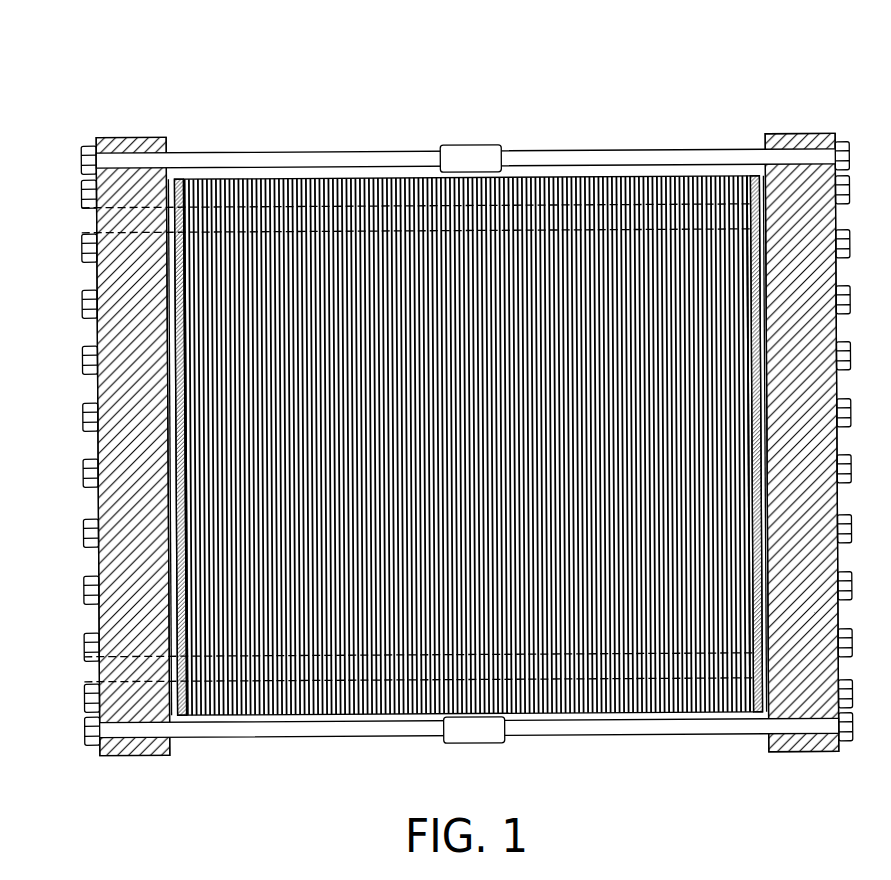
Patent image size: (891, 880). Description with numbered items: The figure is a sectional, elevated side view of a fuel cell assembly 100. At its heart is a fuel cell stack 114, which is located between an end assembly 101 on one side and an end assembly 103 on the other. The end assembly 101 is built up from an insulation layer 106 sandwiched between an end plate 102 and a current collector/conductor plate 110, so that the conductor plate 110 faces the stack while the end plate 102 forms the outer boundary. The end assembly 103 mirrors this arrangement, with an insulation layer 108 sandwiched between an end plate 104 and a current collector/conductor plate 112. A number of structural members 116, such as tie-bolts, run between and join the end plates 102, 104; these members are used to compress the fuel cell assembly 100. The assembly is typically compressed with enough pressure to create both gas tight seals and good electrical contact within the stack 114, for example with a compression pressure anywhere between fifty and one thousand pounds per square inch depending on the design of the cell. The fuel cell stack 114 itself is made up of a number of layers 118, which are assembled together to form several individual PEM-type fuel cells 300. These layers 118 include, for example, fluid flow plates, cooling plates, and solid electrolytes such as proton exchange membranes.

The fuel cell assembly 100 is at (401, 27).
The end assembly 101 is at (112, 392).
The end plate 102 is at (123, 143).
The end assembly 103 is at (820, 392).
The end plate 104 is at (767, 117).
The insulation layer 106 is at (173, 182).
The insulation layer 108 is at (763, 182).
The current collector/conductor plate 110 is at (187, 182).
The current collector/conductor plate 112 is at (757, 180).
The fuel cell stack 114 is at (537, 148).
The structural members 116 is at (395, 153).
The layers 118 is at (276, 708).
The PEM-type fuel cells 300 is at (588, 182).